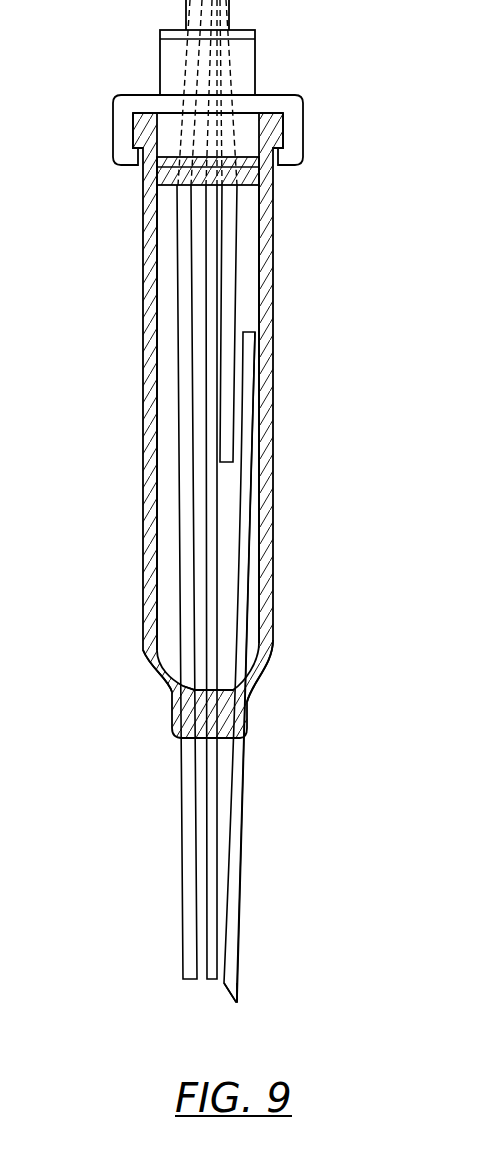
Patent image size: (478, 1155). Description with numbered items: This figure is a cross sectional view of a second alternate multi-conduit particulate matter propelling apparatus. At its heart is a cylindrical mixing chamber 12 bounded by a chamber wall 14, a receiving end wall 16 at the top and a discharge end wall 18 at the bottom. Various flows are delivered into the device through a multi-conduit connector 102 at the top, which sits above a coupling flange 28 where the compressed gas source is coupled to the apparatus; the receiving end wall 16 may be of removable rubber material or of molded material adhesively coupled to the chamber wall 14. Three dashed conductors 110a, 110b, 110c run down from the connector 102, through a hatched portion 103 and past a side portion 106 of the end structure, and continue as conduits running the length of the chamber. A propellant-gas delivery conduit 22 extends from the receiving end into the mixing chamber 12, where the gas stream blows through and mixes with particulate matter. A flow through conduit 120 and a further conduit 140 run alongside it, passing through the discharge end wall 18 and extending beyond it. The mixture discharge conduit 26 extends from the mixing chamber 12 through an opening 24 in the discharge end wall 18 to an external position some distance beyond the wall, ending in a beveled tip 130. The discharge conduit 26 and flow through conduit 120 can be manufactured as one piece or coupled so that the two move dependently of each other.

The mixing chamber 12 is at (173, 513).
The chamber wall 14 is at (148, 335).
The receiving end wall 16 is at (165, 180).
The discharge end wall 18 is at (175, 718).
The propellant-gas delivery conduit 22 is at (230, 243).
The opening 24 is at (155, 645).
The mixture discharge conduit 26 is at (248, 508).
The coupling flange 28 is at (112, 97).
The multi-conduit connector 102 is at (287, 79).
The ferrule plug 103 is at (245, 140).
The collar 106 is at (290, 138).
The optical fiber 110a is at (193, 43).
The optical fiber 110b is at (222, 62).
The optical fiber 110c is at (207, 105).
The flow through conduit 120 is at (210, 572).
The needle tip 130 is at (227, 1002).
The first tube 140 is at (183, 257).